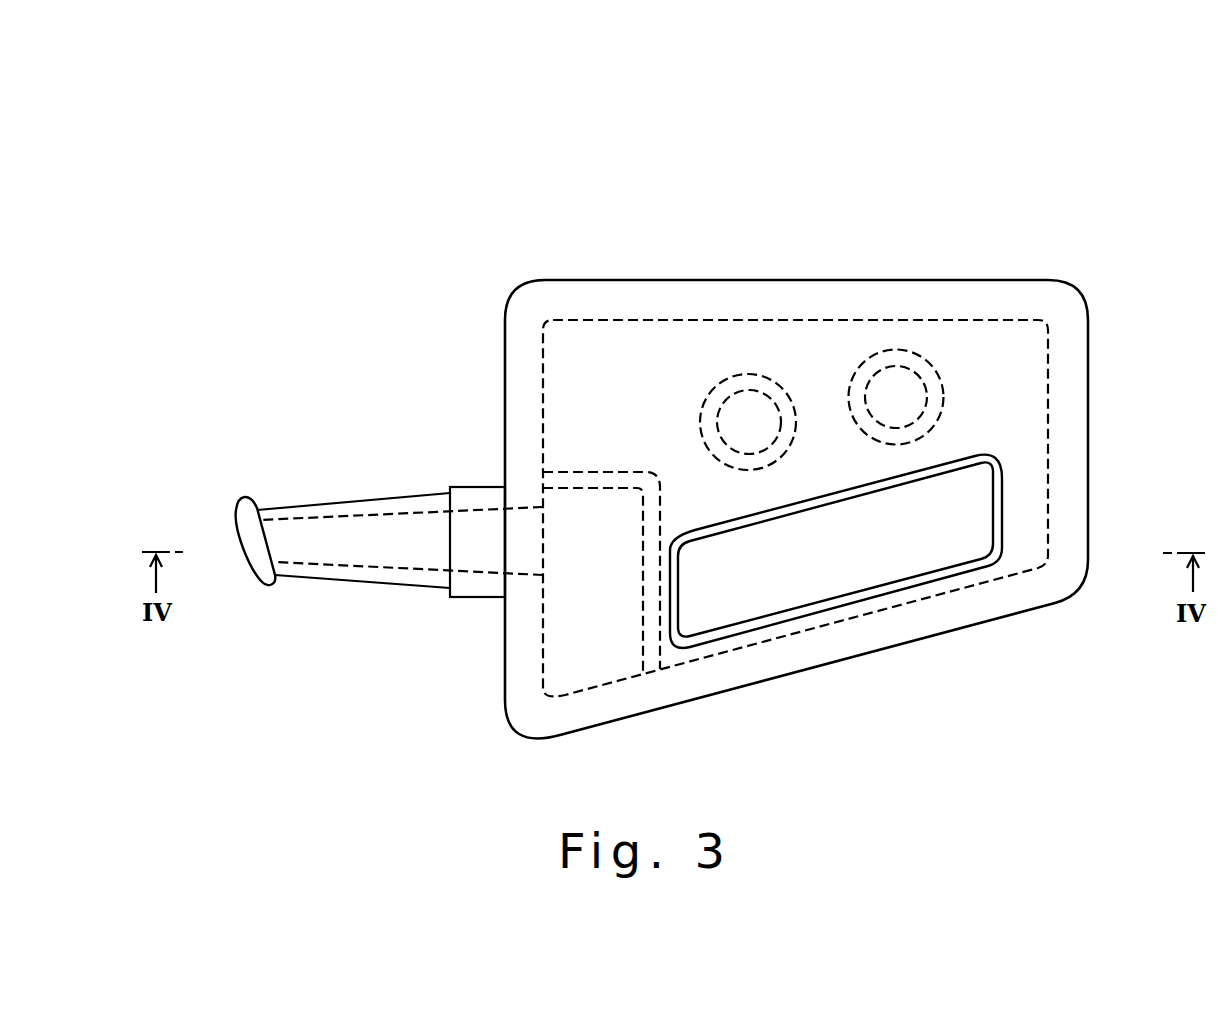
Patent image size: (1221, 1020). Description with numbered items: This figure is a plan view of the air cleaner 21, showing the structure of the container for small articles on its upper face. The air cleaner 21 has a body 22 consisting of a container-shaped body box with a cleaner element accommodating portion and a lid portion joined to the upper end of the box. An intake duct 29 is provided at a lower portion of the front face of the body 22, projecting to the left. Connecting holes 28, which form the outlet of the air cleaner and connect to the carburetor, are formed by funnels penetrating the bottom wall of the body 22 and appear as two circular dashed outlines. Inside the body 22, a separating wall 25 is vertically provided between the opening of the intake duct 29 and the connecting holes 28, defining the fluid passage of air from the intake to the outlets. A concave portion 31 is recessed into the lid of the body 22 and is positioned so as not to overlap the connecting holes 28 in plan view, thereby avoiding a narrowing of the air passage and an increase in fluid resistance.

The air cleaner 21 is at (638, 280).
The body 22 is at (780, 278).
The separating wall 25 is at (598, 470).
The connecting holes 28 is at (882, 350).
The intake duct 29 is at (340, 498).
The concave portion 31 is at (888, 488).